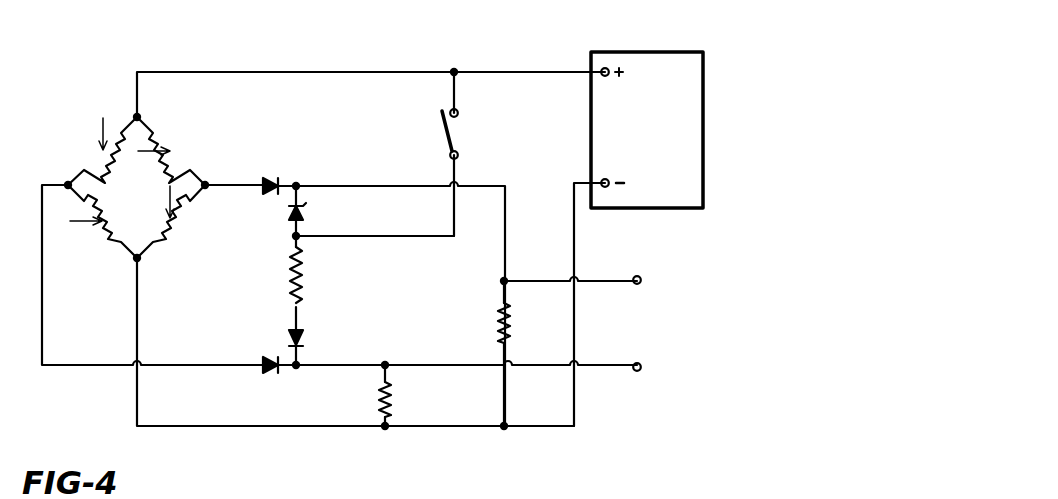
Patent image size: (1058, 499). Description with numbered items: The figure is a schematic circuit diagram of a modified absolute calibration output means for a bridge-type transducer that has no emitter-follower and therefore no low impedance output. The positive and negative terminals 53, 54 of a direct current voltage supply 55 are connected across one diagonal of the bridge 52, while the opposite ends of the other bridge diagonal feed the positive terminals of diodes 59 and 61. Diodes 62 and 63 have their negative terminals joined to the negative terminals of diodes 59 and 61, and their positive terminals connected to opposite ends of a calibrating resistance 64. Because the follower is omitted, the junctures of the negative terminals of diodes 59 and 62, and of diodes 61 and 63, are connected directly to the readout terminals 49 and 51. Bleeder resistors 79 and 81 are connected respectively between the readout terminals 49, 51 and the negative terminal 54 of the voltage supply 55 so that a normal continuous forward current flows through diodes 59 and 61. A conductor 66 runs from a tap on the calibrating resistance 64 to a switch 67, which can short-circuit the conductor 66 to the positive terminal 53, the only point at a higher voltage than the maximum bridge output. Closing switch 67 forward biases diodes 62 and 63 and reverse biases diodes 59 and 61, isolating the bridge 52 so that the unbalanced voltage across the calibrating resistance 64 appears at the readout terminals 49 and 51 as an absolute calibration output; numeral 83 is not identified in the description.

The readout terminal 49 is at (642, 282).
The readout terminal 51 is at (641, 364).
The bridge 52 is at (88, 129).
The positive terminal 53 is at (608, 66).
The negative terminal 54 is at (606, 190).
The direct current voltage supply 55 is at (690, 52).
The diode 59 is at (276, 178).
The diode 61 is at (270, 356).
The diode 62 is at (310, 215).
The diode 63 is at (308, 341).
The calibrating resistance 64 is at (310, 278).
The conductor 66 is at (400, 240).
The switch 67 is at (446, 139).
The bleeder resistor 79 is at (501, 327).
The bleeder resistor 81 is at (382, 397).
The circuit 83 is at (520, 492).